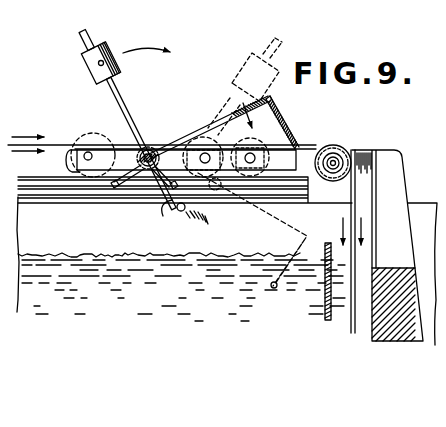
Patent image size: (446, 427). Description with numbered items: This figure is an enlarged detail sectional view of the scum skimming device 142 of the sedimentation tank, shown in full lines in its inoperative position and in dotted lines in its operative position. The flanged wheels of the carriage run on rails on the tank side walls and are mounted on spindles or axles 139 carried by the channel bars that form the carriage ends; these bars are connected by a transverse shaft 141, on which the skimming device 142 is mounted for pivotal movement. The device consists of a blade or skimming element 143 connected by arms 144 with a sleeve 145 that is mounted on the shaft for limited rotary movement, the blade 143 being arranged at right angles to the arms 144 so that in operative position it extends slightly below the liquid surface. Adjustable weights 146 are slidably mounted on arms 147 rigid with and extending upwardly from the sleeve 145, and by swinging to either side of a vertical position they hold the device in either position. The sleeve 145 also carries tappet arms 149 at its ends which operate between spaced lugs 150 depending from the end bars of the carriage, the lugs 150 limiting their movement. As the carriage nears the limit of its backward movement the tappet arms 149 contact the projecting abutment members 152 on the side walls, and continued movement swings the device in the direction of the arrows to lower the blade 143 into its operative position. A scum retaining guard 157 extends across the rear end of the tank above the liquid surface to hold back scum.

The spindles or axles 139 is at (78, 155).
The transverse shaft 141 is at (152, 150).
The scum skimming device 142 is at (270, 99).
The blade or skimming element 143 is at (290, 139).
The arms 144 is at (203, 124).
The sleeve 145 is at (144, 166).
The adjustable weights 146 is at (110, 47).
The arms 147 is at (122, 99).
The tappet arms 149 is at (170, 205).
The spaced lugs 150 is at (113, 186).
The abutment members 152 is at (186, 206).
The scum retaining guard 157 is at (325, 247).